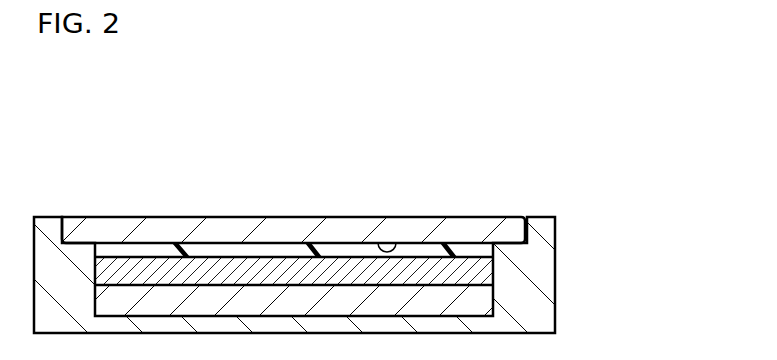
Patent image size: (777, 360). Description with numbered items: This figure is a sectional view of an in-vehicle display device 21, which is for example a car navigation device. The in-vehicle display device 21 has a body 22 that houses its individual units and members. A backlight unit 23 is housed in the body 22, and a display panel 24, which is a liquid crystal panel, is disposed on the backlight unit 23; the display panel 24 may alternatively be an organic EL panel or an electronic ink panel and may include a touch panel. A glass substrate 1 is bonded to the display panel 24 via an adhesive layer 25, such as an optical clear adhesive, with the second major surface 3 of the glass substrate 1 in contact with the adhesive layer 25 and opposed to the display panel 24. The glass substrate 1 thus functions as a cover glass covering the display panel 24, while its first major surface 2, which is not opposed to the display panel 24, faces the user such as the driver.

The glass substrate 1 is at (462, 230).
The first major surface 2 is at (343, 217).
The second major surface 3 is at (397, 240).
The in-vehicle display device 21 is at (494, 116).
The body 22 is at (515, 302).
The backlight unit 23 is at (145, 298).
The display panel 24 is at (203, 270).
The adhesive layer 25 is at (268, 248).